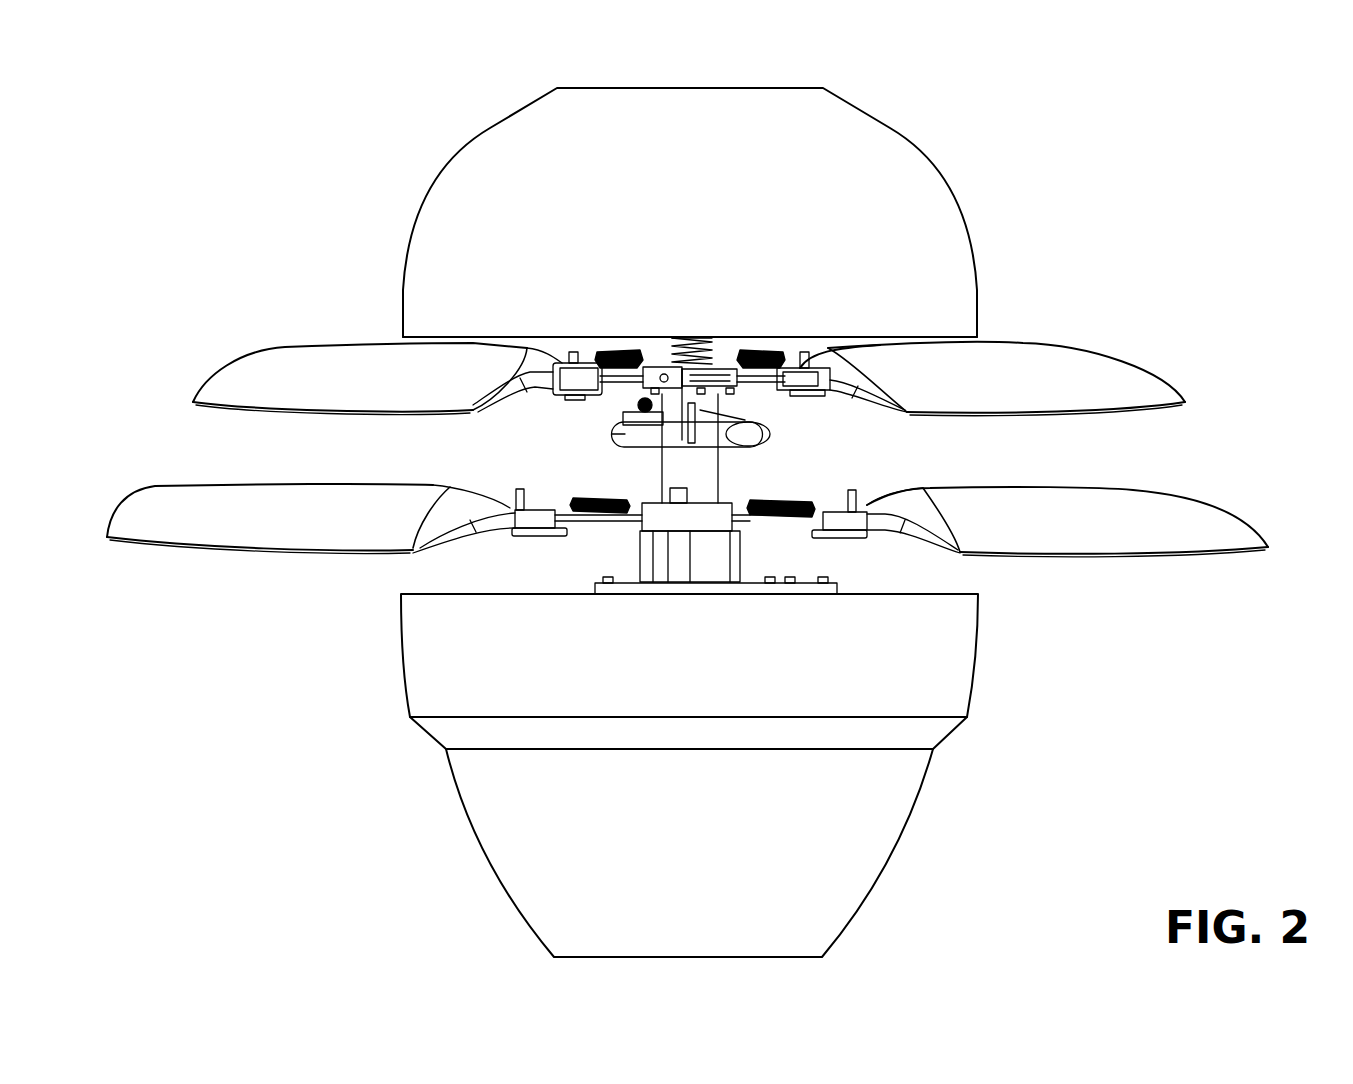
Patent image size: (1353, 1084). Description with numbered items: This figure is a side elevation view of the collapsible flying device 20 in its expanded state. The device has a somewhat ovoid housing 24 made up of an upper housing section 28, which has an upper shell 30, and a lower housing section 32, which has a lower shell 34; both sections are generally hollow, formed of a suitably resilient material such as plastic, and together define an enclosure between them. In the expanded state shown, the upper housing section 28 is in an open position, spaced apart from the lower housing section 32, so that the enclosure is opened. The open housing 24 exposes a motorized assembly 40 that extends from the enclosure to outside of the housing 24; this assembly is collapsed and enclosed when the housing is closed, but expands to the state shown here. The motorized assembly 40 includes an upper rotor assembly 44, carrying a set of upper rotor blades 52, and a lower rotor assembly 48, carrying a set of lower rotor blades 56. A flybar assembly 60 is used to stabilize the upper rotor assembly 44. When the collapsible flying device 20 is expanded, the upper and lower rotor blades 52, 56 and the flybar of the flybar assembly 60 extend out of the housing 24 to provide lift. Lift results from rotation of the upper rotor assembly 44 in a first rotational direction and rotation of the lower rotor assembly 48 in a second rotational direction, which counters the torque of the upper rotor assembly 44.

The collapsible flying device 20 is at (312, 129).
The housing 24 is at (895, 96).
The upper housing section 28 is at (942, 187).
The upper shell 30 is at (976, 262).
The lower housing section 32 is at (909, 886).
The lower shell 34 is at (922, 790).
The motorized assembly 40 is at (362, 455).
The upper rotor assembly 44 is at (1020, 339).
The lower rotor assembly 48 is at (362, 572).
The upper rotor blades 52 is at (283, 346).
The lower rotor blades 56 is at (190, 550).
The flybar assembly 60 is at (795, 432).